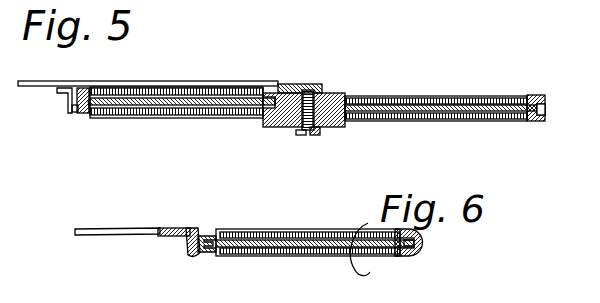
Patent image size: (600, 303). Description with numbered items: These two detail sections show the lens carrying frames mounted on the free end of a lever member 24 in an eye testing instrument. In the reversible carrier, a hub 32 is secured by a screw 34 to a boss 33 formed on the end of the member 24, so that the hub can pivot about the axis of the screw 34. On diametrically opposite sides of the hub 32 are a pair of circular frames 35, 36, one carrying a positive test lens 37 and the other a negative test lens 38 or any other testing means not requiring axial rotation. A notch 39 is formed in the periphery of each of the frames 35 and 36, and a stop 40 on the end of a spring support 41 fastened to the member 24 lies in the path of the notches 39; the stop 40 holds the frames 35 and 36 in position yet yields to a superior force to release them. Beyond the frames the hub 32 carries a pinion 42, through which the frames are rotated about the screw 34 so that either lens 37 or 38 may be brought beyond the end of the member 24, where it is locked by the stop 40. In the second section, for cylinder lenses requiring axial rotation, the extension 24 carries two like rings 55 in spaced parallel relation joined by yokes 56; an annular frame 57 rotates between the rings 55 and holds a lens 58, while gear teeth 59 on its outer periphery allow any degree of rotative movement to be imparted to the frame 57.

In FIG. 5, the member 24 is at (46, 80).
In FIG. 6, the member 24 is at (137, 229).
In FIG. 5, the hub 32 is at (336, 128).
In FIG. 5, the boss 33 is at (320, 86).
In FIG. 5, the screw 34 is at (306, 136).
In FIG. 5, the circular frame 35 is at (88, 112).
In FIG. 5, the circular frame 36 is at (535, 97).
In FIG. 5, the positive test lens 37 is at (445, 106).
In FIG. 5, the negative test lens 38 is at (205, 101).
In FIG. 5, the notch 39 is at (81, 115).
In FIG. 5, the stop 40 is at (76, 113).
In FIG. 5, the spring support 41 is at (70, 96).
In FIG. 5, the pinion 42 is at (282, 128).
In FIG. 6, the ring 55 is at (377, 254).
In FIG. 6, the yoke 56 is at (190, 240).
In FIG. 6, the frame 57 is at (220, 237).
In FIG. 6, the lens 58 is at (274, 256).
In FIG. 6, the gear teeth 59 is at (199, 252).